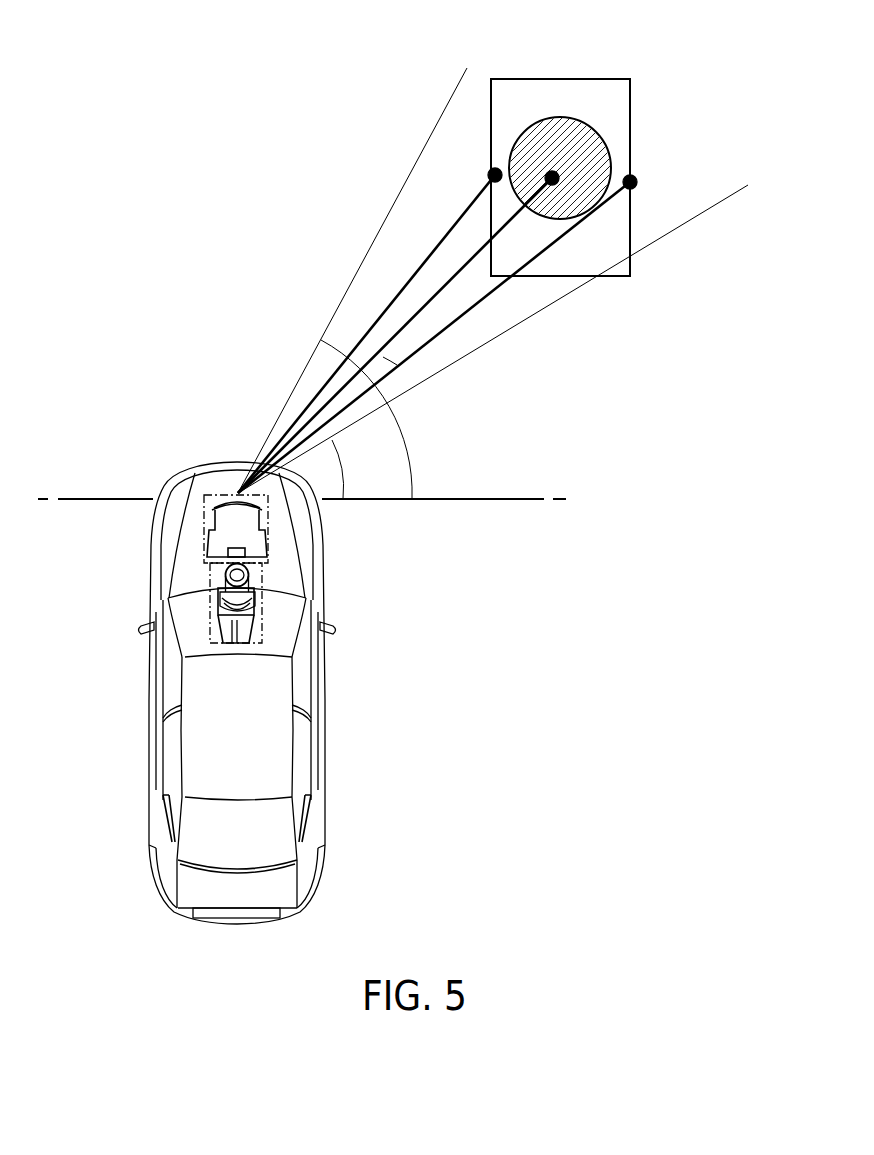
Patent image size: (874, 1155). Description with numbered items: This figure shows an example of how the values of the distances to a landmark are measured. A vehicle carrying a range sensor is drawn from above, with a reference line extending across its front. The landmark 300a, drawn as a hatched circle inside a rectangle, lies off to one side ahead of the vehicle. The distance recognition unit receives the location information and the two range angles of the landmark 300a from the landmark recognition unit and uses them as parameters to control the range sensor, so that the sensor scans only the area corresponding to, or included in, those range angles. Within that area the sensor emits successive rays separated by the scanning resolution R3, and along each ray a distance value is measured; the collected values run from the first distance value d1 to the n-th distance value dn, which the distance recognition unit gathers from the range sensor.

The landmark 300a is at (533, 79).
The n-th distance value dn is at (366, 334).
The scanning resolution R3 is at (395, 335).
The first distance value d1 is at (434, 337).